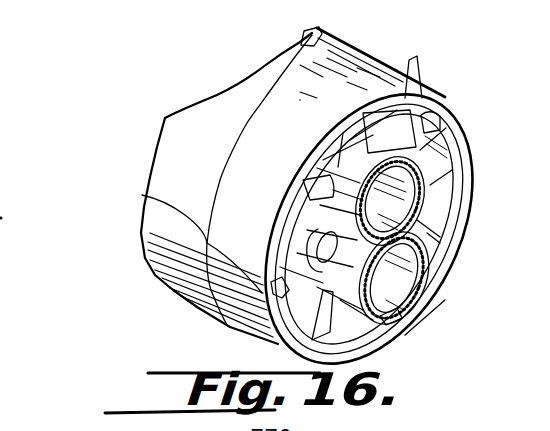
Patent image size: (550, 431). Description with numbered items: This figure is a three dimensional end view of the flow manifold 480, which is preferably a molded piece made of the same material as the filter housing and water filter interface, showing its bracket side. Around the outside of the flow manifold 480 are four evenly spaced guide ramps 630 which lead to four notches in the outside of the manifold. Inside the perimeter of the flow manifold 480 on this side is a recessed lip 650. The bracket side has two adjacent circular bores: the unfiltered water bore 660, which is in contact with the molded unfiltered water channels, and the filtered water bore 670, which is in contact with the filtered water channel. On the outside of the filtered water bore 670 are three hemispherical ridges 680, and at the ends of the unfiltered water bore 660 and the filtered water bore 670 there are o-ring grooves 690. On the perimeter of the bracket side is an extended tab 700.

The flow manifold 480 is at (205, 94).
The guide ramps 630 is at (433, 113).
The recessed lip 650 is at (453, 157).
The unfiltered water bore 660 is at (420, 274).
The filtered water bore 670 is at (398, 193).
The hemispherical ridges 680 is at (413, 58).
The o-ring grooves 690 is at (402, 313).
The extended tab 700 is at (142, 195).